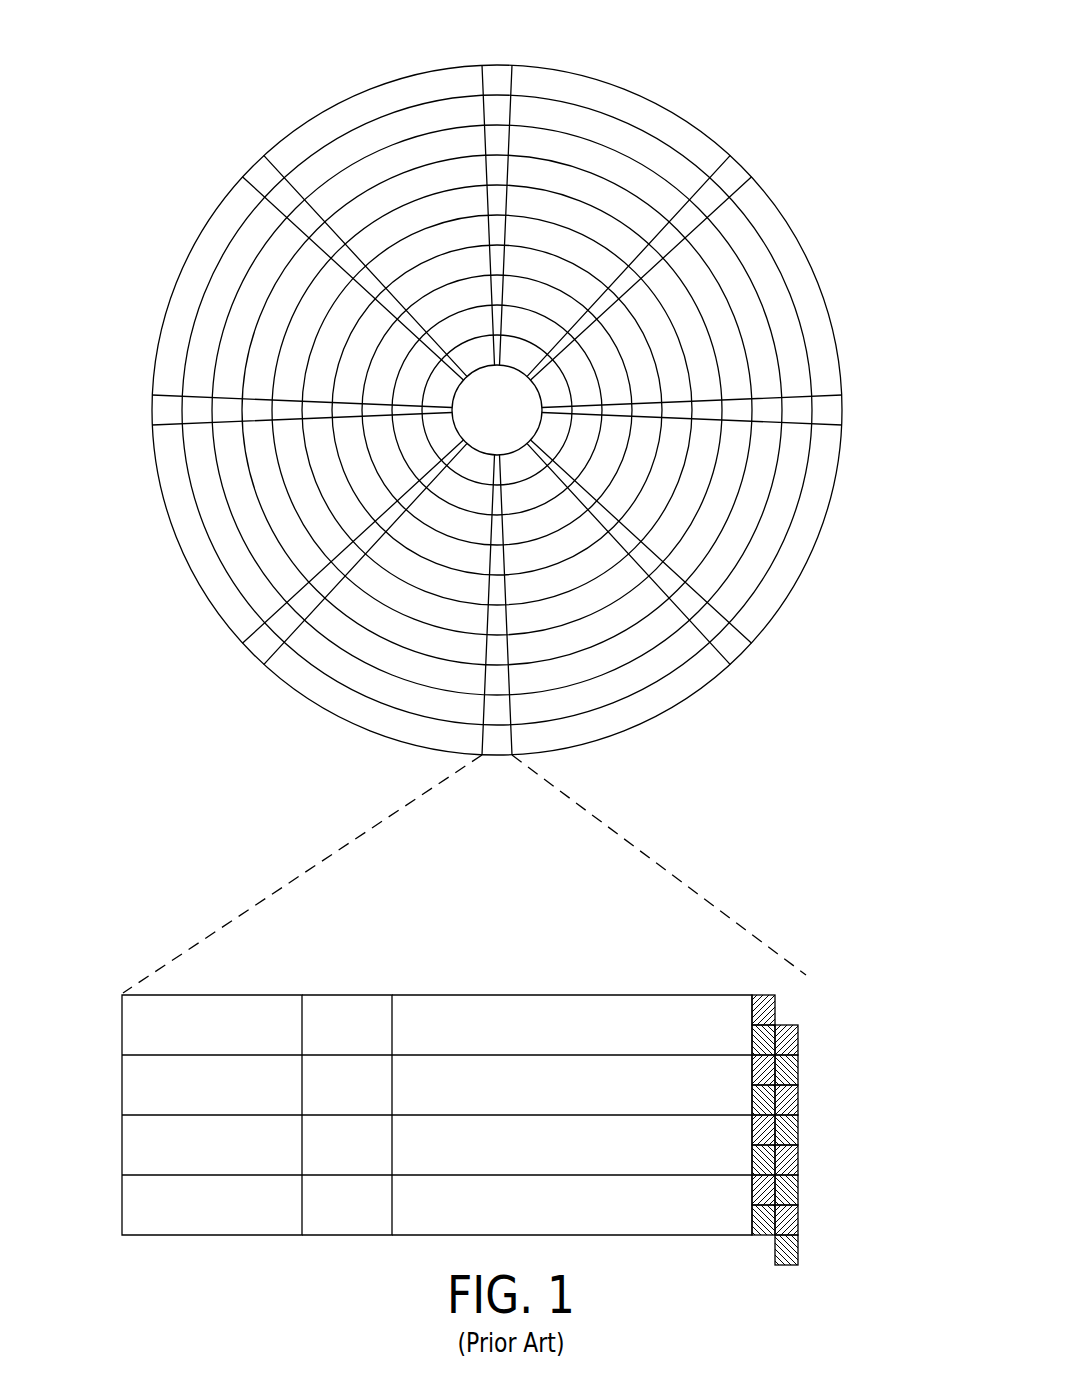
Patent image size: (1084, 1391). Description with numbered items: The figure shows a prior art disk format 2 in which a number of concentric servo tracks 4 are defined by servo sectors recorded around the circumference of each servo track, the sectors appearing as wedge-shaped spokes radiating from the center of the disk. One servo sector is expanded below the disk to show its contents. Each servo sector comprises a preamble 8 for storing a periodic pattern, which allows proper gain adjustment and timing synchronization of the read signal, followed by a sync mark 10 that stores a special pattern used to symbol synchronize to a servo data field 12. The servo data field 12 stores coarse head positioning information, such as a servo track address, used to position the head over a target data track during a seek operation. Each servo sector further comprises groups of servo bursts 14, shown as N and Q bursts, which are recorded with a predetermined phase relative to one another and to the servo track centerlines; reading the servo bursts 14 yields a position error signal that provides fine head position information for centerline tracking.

The disk format 2 is at (238, 66).
The servo track 4 is at (638, 115).
The preamble 8 is at (220, 995).
The sync mark 10 is at (347, 995).
The servo data field 12 is at (562, 995).
The servo bursts 14 is at (796, 992).